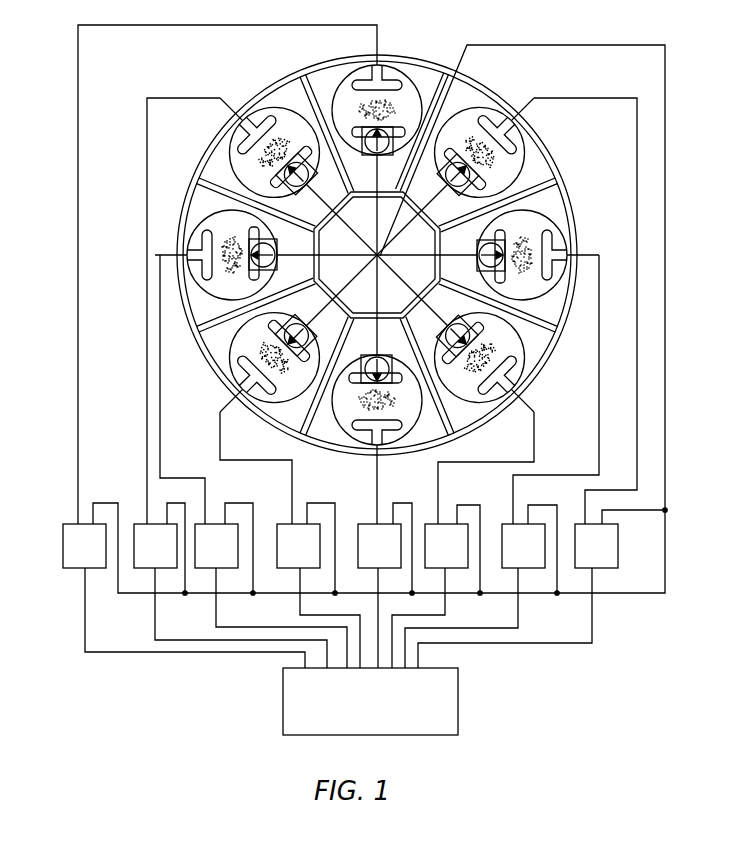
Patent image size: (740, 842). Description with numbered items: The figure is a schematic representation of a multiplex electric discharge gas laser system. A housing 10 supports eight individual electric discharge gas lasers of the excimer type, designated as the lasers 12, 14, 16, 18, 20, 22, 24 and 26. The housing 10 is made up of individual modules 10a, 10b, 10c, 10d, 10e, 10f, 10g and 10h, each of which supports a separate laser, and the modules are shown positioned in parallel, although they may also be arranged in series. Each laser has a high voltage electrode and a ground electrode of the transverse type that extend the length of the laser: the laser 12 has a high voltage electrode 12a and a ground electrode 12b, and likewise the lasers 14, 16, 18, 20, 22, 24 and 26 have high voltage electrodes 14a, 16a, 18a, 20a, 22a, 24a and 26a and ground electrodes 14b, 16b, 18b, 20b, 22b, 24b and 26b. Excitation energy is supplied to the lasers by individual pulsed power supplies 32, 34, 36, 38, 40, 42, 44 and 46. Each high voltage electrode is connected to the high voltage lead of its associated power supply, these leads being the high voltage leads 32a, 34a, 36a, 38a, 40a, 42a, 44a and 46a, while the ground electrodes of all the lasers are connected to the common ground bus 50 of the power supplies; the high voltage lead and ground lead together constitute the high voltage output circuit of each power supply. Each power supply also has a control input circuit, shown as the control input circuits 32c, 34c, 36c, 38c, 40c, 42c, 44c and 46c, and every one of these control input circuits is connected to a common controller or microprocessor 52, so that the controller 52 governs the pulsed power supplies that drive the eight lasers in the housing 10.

The housing 10 is at (563, 160).
The module 10a is at (542, 140).
The module 10b is at (317, 63).
The module 10c is at (209, 146).
The module 10d is at (180, 292).
The module 10e is at (232, 398).
The module 10f is at (318, 446).
The module 10g is at (458, 440).
The module 10h is at (577, 246).
The laser 12 is at (484, 108).
The high voltage electrode 12a is at (500, 125).
The ground electrode 12b is at (440, 192).
The laser 14 is at (414, 95).
The high voltage electrode 14a is at (390, 82).
The ground electrode 14b is at (365, 157).
The laser 16 is at (277, 107).
The high voltage electrode 16a is at (258, 120).
The ground electrode 16b is at (312, 192).
The laser 18 is at (200, 213).
The high voltage electrode 18a is at (200, 242).
The ground electrode 18b is at (282, 258).
The laser 20 is at (224, 356).
The high voltage electrode 20a is at (245, 380).
The ground electrode 20b is at (296, 322).
The laser 22 is at (340, 442).
The high voltage electrode 22a is at (370, 432).
The ground electrode 22b is at (370, 352).
The laser 24 is at (522, 372).
The high voltage electrode 24a is at (512, 380).
The ground electrode 24b is at (440, 323).
The laser 26 is at (550, 218).
The high voltage electrode 26a is at (560, 246).
The ground electrode 26b is at (475, 258).
The power supply 32 is at (580, 523).
The high voltage lead 32a is at (612, 490).
The control input circuit 32c is at (592, 586).
The power supply 34 is at (510, 523).
The high voltage lead 34a is at (545, 475).
The control input circuit 34c is at (518, 598).
The power supply 36 is at (432, 523).
The high voltage lead 36a is at (440, 497).
The control input circuit 36c is at (445, 600).
The power supply 38 is at (366, 523).
The high voltage lead 38a is at (379, 492).
The control input circuit 38c is at (378, 602).
The power supply 40 is at (285, 523).
The high voltage lead 40a is at (228, 460).
The control input circuit 40c is at (300, 600).
The power supply 42 is at (213, 523).
The high voltage lead 42a is at (205, 490).
The control input circuit 42c is at (216, 600).
The power supply 44 is at (153, 523).
The high voltage lead 44a is at (147, 484).
The control input circuit 44c is at (155, 605).
The power supply 46 is at (68, 523).
The high voltage lead 46a is at (78, 472).
The control input circuit 46c is at (85, 598).
The common ground bus 50 is at (665, 600).
The controller 52 is at (458, 706).